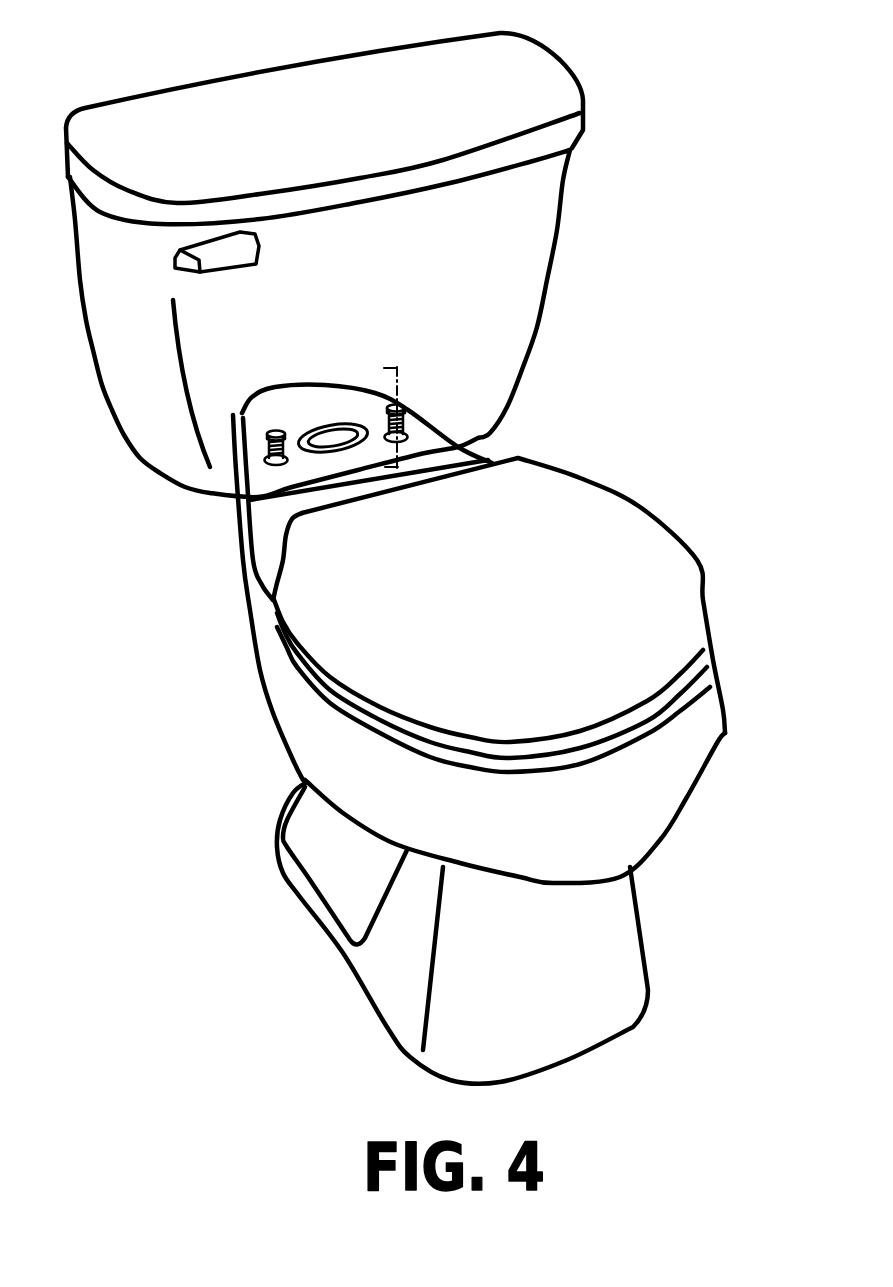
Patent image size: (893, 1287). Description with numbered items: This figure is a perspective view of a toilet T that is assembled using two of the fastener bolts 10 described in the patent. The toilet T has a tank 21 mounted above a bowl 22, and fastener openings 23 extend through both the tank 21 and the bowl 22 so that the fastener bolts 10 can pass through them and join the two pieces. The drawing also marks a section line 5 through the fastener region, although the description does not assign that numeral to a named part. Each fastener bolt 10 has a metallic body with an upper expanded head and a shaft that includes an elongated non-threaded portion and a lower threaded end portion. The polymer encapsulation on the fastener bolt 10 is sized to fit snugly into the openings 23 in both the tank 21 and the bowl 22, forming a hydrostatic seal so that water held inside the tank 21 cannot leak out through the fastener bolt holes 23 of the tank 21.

The toilet T is at (581, 72).
The tank 21 is at (568, 238).
The bowl 22 is at (232, 530).
The fastener openings 23 is at (265, 452).
The fastener bolt 10 is at (279, 426).
The hole 5 is at (386, 368).